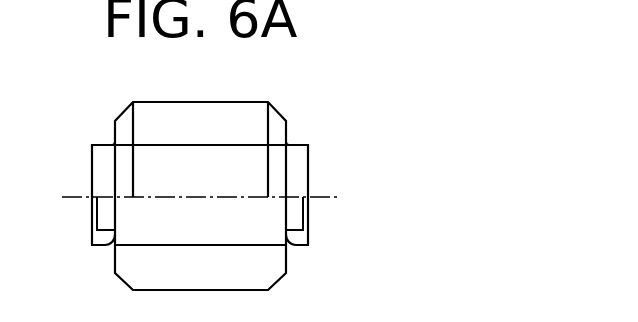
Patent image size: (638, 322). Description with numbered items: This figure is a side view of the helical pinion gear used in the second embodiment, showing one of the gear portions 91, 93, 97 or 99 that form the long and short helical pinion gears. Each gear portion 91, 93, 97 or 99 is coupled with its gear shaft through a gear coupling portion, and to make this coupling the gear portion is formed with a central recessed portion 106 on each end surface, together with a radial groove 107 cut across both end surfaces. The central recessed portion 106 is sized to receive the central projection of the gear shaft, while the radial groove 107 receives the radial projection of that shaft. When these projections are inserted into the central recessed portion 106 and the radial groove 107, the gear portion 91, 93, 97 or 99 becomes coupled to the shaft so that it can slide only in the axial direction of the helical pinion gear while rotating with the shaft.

The gear portion 91 is at (304, 168).
The gear portion 93 is at (304, 168).
The gear portion 97 is at (304, 168).
The gear portion 99 is at (306, 110).
The central recessed portion 106 is at (294, 226).
The radial groove 107 is at (103, 238).